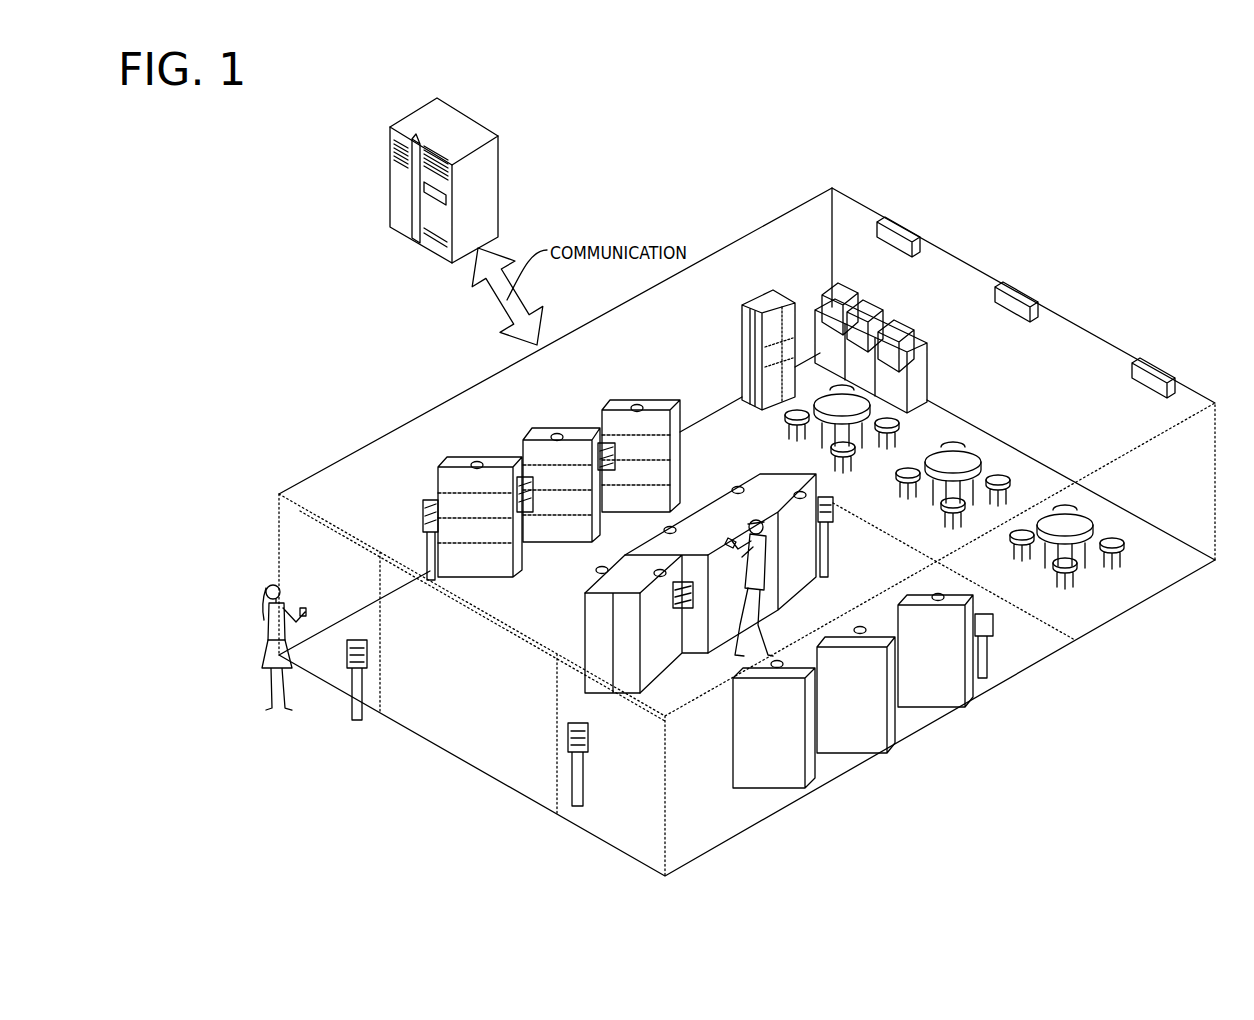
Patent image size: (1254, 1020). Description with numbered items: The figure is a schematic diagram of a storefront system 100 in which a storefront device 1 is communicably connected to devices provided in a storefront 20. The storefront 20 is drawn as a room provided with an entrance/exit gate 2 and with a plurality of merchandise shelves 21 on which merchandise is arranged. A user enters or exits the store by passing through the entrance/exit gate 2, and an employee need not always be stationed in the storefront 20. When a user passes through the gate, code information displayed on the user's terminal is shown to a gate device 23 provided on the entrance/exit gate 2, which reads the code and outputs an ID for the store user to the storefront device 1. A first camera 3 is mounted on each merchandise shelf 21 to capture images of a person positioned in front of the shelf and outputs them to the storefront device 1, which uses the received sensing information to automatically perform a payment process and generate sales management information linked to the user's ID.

The storefront device 1 is at (477, 113).
The entrance/exit gate 2 is at (462, 698).
The first camera 3 is at (477, 462).
The storefront 20 is at (775, 215).
The merchandise shelf 21 is at (438, 465).
The gate device 23 is at (347, 655).
The storefront system 100 is at (1049, 200).